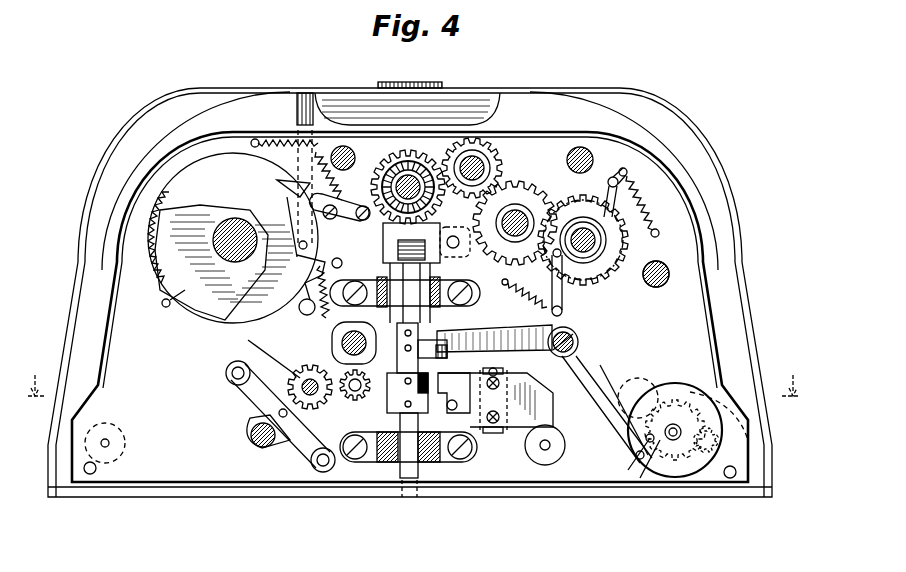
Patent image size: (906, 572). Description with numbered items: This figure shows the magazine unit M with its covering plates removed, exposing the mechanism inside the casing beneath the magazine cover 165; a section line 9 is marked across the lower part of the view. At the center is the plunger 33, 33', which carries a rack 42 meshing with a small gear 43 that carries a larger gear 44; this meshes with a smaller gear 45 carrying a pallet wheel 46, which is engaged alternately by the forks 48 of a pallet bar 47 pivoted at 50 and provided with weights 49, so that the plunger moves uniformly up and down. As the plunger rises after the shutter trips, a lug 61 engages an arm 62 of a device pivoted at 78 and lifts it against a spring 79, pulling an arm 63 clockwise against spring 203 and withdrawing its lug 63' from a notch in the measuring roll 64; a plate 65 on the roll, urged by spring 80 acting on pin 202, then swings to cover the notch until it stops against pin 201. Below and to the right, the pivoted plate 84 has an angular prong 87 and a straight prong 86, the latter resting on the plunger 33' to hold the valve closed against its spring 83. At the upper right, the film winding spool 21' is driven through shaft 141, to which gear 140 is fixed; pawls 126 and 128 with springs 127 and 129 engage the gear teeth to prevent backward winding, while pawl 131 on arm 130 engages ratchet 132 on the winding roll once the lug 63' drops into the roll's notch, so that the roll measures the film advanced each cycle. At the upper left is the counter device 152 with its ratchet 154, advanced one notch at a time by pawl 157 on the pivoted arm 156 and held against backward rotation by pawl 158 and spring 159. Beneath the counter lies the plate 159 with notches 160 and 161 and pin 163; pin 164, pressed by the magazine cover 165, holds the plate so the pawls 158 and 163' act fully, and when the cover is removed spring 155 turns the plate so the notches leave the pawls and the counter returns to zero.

The magazine cover 165 is at (205, 86).
The mechanism unit M is at (620, 88).
The pawl 157 is at (300, 128).
The pin 164 is at (318, 92).
The counter device 152 is at (185, 240).
The spring 155 is at (163, 305).
The ratchet 154 is at (180, 304).
The plate 159 is at (280, 190).
The notch 160 is at (300, 202).
The pin 163 is at (286, 231).
The notch 161 is at (298, 254).
The pivoted arm 156 is at (336, 259).
The pawl 158 is at (302, 292).
The pawl 163' is at (380, 182).
The gear 140 is at (557, 208).
The shaft 141 is at (625, 221).
The ratchet 132 is at (622, 230).
The pawl 131 is at (638, 248).
The arm 130 is at (612, 300).
The film winding spool 21' is at (612, 184).
The spring 129 is at (648, 204).
The pawl 128 is at (646, 184).
The spring 79 is at (538, 332).
The pawl 126 is at (526, 290).
The spring 127 is at (504, 288).
The plunger 33' is at (405, 352).
The slide rod 33 is at (401, 512).
The rack 42 is at (378, 442).
The straight prong 86 is at (450, 450).
The arm 62 is at (470, 333).
The pivot 78 is at (600, 338).
The lug 61 is at (446, 351).
The pivoted plate 84 is at (523, 397).
The angular prong 87 is at (468, 374).
The spring 83 is at (545, 448).
The forks 48 is at (320, 406).
The small gear 43 is at (350, 372).
The larger gear 44 is at (350, 332).
The weights 49 is at (226, 373).
The pallet bar 47 is at (240, 385).
The pivot 50 is at (279, 414).
The pallet wheel 46 is at (290, 392).
The smaller gear 45 is at (290, 368).
The arm 63 is at (607, 409).
The measuring roll 64 is at (681, 387).
The spring 80 is at (673, 448).
The pin 202 is at (672, 438).
The spring 203 is at (655, 387).
The pin 201 is at (646, 439).
The lug 63' is at (613, 461).
The plate 65 is at (647, 457).
The section line 9 is at (414, 399).